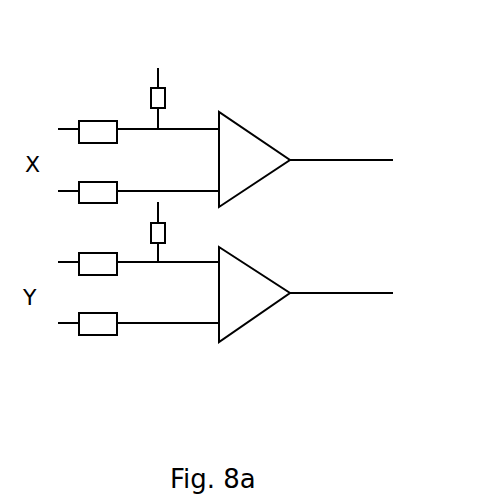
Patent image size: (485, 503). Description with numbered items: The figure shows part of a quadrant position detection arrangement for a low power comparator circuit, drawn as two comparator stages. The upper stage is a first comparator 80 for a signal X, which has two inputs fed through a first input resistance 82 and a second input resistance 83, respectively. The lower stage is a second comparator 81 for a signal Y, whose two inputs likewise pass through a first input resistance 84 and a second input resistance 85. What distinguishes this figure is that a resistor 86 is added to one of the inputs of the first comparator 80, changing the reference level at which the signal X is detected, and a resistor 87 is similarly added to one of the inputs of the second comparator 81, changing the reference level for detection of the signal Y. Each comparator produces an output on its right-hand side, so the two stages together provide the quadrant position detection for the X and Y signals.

The first comparator 80 is at (250, 130).
The second comparator 81 is at (243, 262).
The first input resistance 82 is at (87, 121).
The second input resistance 83 is at (100, 182).
The first input resistance 84 is at (92, 276).
The second input resistance 85 is at (102, 335).
The resistor 86 is at (163, 88).
The resistor 87 is at (163, 223).